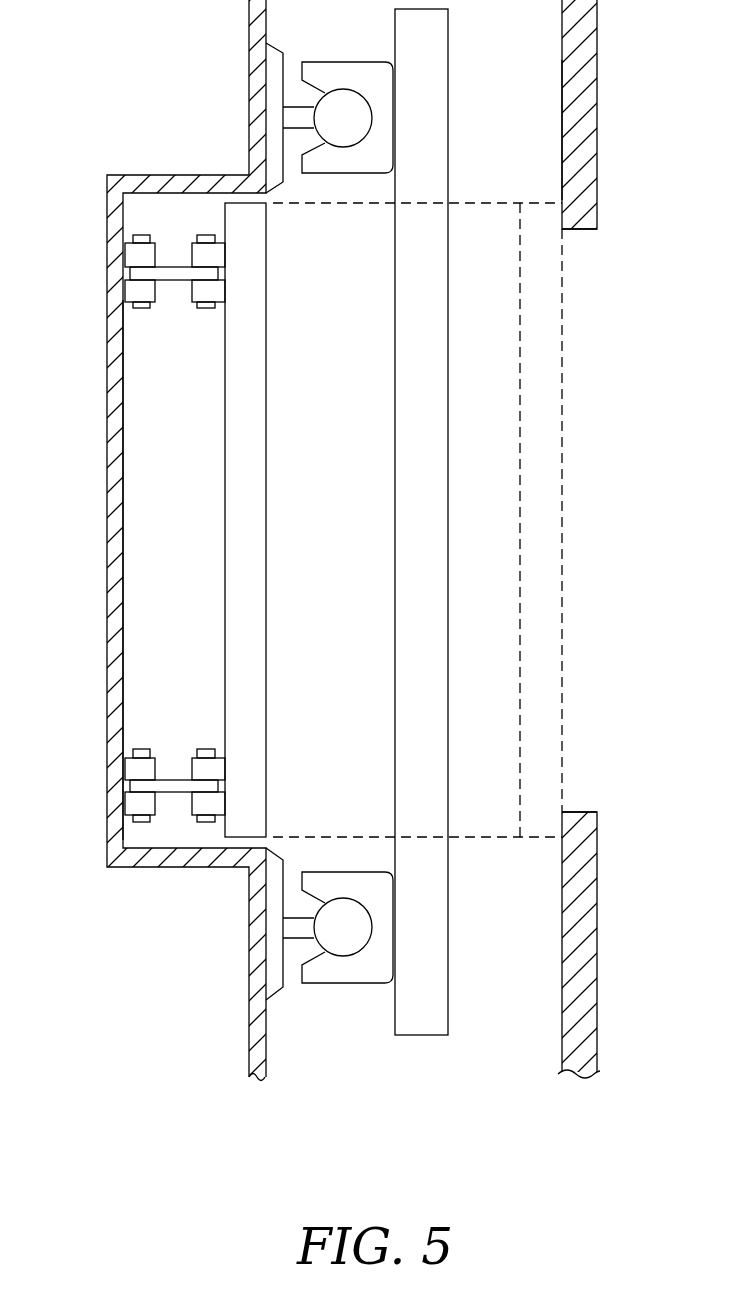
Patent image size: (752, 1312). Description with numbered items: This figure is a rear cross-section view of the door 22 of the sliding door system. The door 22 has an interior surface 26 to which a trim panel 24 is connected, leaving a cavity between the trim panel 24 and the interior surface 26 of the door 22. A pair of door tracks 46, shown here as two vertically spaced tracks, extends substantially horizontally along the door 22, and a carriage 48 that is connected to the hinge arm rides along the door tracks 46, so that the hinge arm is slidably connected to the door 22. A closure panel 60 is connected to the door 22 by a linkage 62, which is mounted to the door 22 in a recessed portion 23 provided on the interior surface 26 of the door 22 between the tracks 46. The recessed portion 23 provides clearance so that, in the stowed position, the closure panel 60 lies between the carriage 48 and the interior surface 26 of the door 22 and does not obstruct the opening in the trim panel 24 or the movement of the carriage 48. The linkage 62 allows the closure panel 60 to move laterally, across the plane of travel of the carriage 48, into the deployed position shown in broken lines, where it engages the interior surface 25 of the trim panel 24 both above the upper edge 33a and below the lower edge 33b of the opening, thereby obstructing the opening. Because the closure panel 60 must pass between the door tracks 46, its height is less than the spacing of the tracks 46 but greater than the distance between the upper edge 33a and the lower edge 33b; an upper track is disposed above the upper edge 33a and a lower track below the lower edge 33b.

The door 22 is at (107, 553).
The recessed portion 23 is at (152, 672).
The trim panel 24 is at (597, 62).
The interior surface of the trim panel 25 is at (562, 125).
The interior surface of the door 26 is at (123, 513).
The upper edge of the opening 33a is at (580, 230).
The lower edge of the opening 33b is at (578, 812).
The door tracks 46 is at (341, 100).
The carriage 48 is at (449, 33).
The closure panel 60 is at (225, 378).
The linkage 62 is at (173, 268).